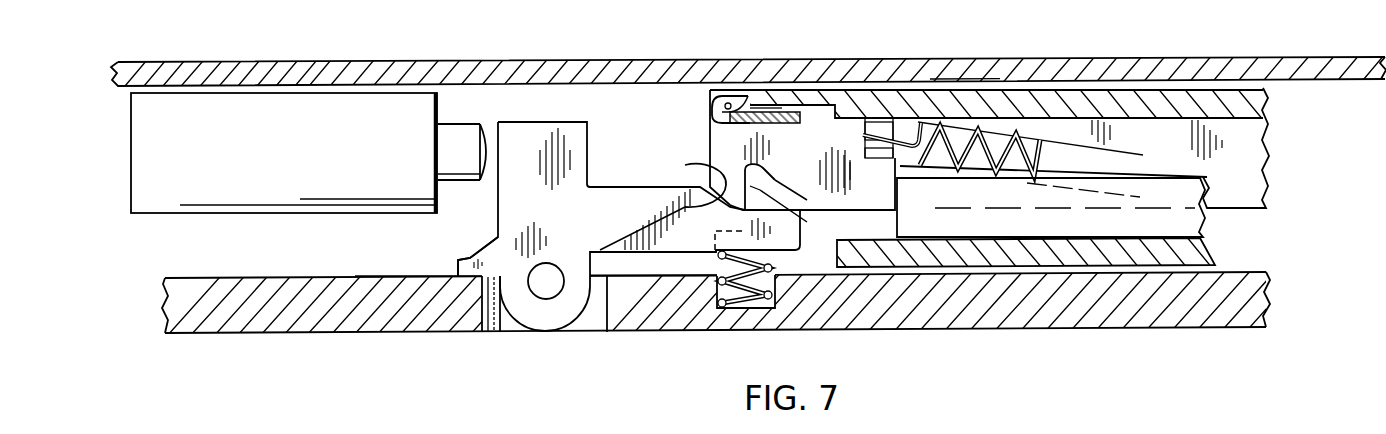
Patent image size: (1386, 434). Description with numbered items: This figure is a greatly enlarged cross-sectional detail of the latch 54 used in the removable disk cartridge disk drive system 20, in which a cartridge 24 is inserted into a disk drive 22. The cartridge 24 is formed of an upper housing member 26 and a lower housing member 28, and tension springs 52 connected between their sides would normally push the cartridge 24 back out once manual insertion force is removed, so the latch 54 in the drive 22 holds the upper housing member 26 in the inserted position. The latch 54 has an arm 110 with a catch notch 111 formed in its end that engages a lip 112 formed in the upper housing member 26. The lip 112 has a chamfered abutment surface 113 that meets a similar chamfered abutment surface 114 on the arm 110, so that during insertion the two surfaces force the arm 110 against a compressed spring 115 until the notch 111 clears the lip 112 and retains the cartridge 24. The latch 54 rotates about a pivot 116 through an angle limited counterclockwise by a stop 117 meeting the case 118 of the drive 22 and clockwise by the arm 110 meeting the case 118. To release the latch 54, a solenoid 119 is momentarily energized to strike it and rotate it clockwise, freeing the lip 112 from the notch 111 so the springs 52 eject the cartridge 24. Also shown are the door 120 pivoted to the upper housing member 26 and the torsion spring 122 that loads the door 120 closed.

The removable disk cartridge disk drive system 20 is at (1072, 53).
The disk drive 22 is at (711, 345).
The cartridge 24 is at (951, 68).
The upper housing member 26 is at (1193, 88).
The lower housing member 28 is at (1068, 262).
The tension springs 52 is at (1040, 154).
The latch 54 is at (585, 147).
The arm 110 is at (790, 238).
The catch notch 111 is at (708, 162).
The lip 112 is at (798, 208).
The chamfered abutment surface 113 is at (700, 214).
The chamfered abutment surface 114 is at (765, 180).
The compressed spring 115 is at (750, 300).
The pivot 116 is at (546, 299).
The stop 117 is at (464, 260).
The case 118 is at (301, 328).
The solenoid 119 is at (408, 100).
The door 120 is at (790, 112).
The torsion spring 122 is at (767, 107).